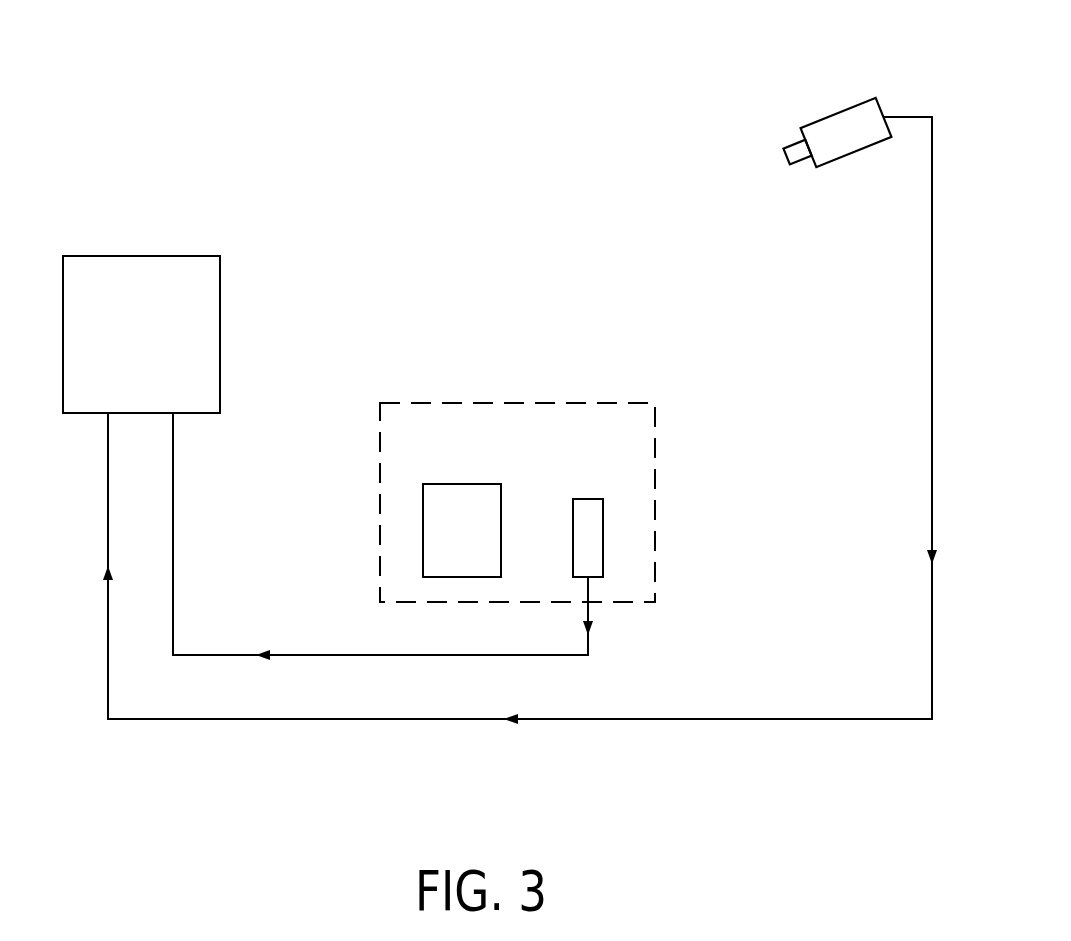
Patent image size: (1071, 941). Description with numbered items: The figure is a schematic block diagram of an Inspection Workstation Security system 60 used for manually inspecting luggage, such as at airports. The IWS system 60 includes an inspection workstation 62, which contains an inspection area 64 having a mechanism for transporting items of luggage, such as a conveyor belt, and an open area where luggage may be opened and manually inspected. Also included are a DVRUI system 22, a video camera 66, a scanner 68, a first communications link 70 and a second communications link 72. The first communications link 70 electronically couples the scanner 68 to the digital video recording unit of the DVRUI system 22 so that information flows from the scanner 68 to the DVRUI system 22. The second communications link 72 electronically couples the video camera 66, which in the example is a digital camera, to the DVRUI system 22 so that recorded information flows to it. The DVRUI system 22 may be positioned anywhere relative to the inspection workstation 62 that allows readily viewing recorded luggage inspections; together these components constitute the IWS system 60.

The Inspection Workstation Security system 60 is at (327, 75).
The DVRUI system 22 is at (117, 354).
The inspection workstation 62 is at (517, 388).
The inspection area 64 is at (445, 548).
The scanner 68 is at (588, 499).
The video camera 66 is at (838, 108).
The first communications link 70 is at (325, 655).
The second communications link 72 is at (681, 719).